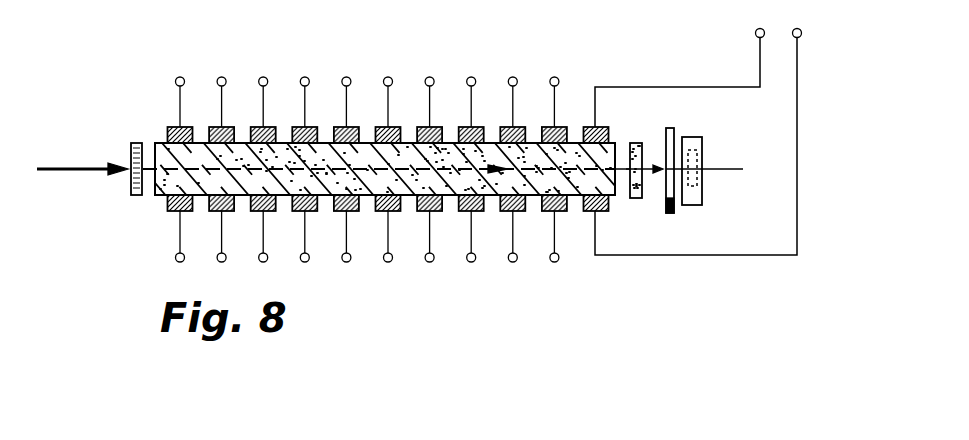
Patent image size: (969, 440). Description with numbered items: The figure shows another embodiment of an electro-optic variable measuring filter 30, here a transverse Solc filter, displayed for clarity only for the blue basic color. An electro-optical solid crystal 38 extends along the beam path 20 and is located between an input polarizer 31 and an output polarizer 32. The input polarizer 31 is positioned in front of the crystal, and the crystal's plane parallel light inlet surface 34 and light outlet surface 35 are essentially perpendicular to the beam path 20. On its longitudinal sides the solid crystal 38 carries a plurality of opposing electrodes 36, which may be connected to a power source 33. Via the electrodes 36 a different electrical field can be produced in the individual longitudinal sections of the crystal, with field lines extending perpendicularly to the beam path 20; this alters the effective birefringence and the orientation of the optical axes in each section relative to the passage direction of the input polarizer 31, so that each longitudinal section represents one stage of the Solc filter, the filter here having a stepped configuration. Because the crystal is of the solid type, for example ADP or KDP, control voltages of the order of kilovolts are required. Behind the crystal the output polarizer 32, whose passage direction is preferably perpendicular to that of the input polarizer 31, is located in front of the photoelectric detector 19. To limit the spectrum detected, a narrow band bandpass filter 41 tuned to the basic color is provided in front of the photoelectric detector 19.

The photoelectric detector 19 is at (693, 153).
The beam path 20 is at (71, 159).
The variable measuring filter 30 is at (545, 46).
The input polarizer 31 is at (137, 200).
The output polarizer 32 is at (634, 199).
The power source 33 is at (782, 30).
The light inlet surface 34 is at (153, 150).
The light outlet surface 35 is at (617, 167).
The electrodes 36 is at (302, 127).
The electro-optic solid crystal 38 is at (373, 211).
The narrow band bandpass filter 41 is at (669, 214).